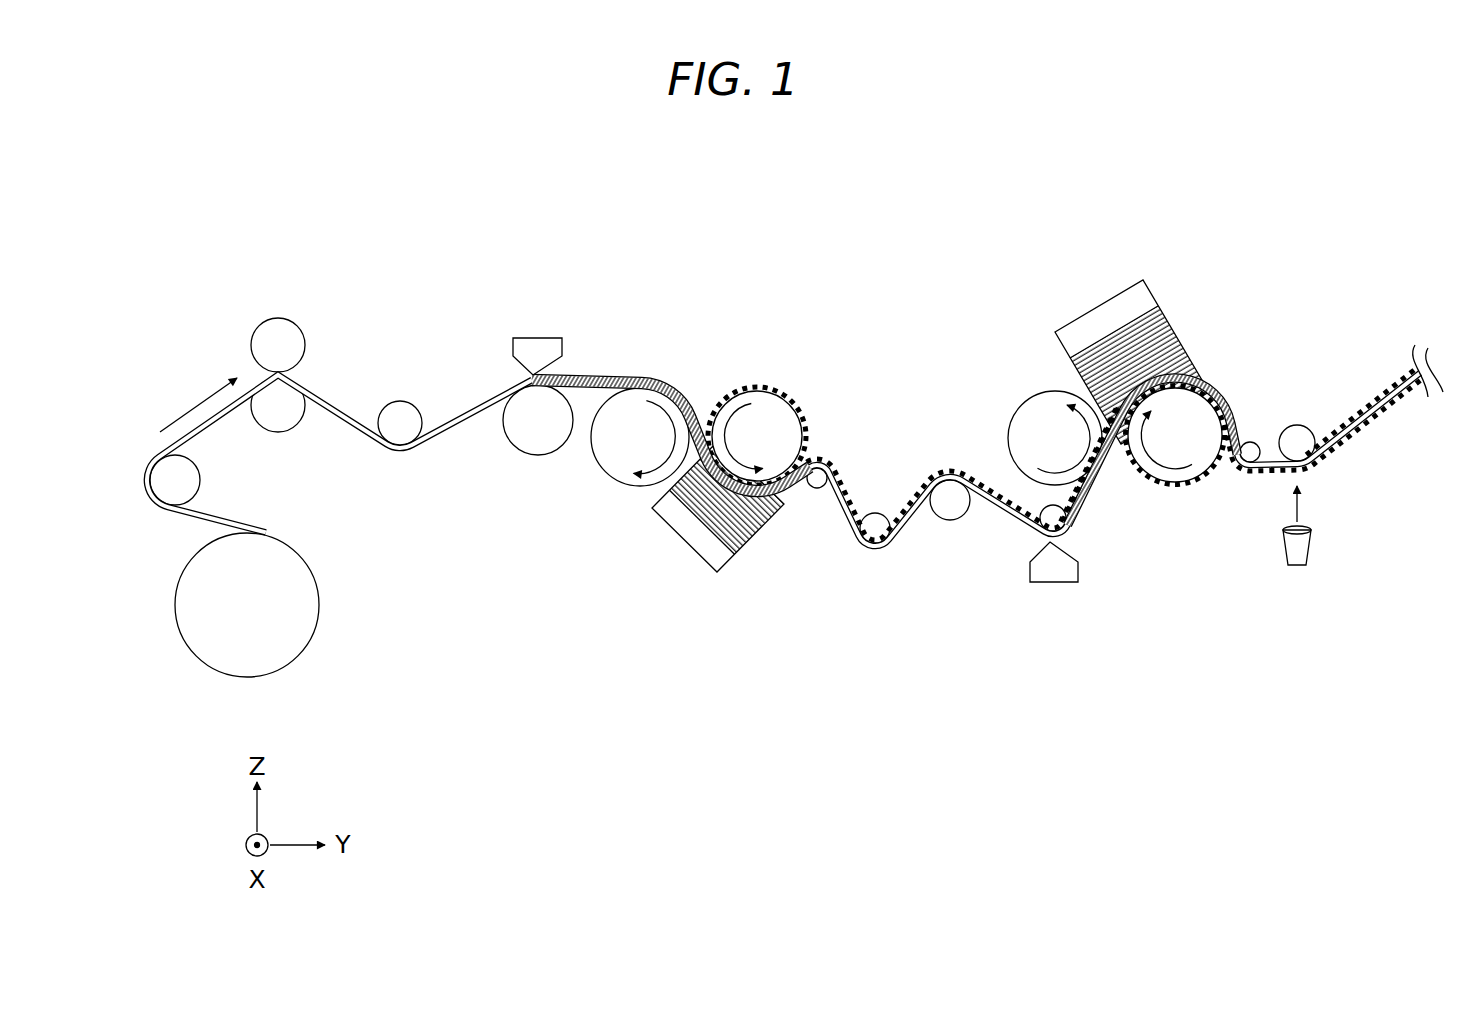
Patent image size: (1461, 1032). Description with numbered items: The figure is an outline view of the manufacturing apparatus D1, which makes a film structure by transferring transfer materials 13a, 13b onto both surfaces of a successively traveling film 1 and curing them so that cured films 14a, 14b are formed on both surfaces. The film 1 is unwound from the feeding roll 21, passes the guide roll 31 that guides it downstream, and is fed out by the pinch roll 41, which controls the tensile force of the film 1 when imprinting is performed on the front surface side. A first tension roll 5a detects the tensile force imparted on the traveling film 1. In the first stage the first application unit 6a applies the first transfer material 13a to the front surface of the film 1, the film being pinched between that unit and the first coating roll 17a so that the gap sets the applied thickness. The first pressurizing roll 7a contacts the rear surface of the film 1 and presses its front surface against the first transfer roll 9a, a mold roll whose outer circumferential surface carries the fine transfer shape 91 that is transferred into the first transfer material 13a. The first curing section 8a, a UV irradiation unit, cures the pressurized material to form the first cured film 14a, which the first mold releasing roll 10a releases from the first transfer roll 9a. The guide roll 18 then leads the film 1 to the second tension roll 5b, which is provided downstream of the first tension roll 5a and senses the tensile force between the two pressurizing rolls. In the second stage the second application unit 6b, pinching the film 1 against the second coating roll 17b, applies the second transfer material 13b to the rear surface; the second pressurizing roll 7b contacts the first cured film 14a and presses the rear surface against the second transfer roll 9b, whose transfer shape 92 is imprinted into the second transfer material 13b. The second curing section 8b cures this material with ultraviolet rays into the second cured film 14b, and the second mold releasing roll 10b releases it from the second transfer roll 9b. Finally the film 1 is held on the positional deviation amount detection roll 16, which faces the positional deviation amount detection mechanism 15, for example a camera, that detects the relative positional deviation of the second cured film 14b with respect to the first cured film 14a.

The film 1 is at (196, 518).
The feeding roll 21 is at (192, 635).
The guide roll 31 is at (186, 482).
The pinch roll 41 is at (284, 345).
The first tension roll 5a is at (409, 418).
The first application unit 6a is at (538, 346).
The first coating roll 17a is at (520, 430).
The first transfer material 13a is at (632, 380).
The first pressurizing roll 7a is at (617, 463).
The first curing section 8a is at (690, 530).
The first transfer roll 9a is at (786, 420).
The transfer shape 91 is at (754, 387).
The first mold releasing roll 10a is at (817, 486).
The first cured film 14a is at (848, 492).
The guide roll 18 is at (883, 536).
The second tension roll 5b is at (956, 506).
The second coating roll 17b is at (1062, 522).
The second application unit 6b is at (1055, 572).
The second transfer material 13b is at (1105, 495).
The second pressurizing roll 7b is at (1043, 428).
The second curing section 8b is at (1124, 300).
The second transfer roll 9b is at (1200, 420).
The transfer shape 92 is at (1198, 488).
The second mold releasing roll 10b is at (1254, 448).
The positional deviation amount detection roll 16 is at (1300, 435).
The second cured film 14b is at (1362, 435).
The positional deviation amount detection mechanism 15 is at (1308, 553).
The manufacturing apparatus D1 is at (992, 194).